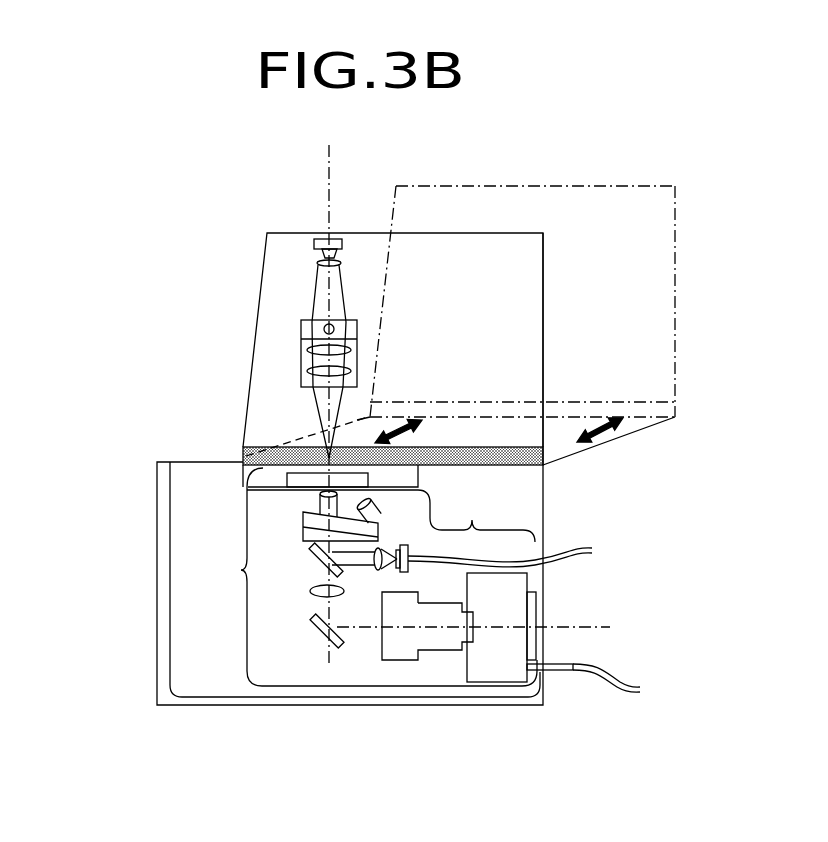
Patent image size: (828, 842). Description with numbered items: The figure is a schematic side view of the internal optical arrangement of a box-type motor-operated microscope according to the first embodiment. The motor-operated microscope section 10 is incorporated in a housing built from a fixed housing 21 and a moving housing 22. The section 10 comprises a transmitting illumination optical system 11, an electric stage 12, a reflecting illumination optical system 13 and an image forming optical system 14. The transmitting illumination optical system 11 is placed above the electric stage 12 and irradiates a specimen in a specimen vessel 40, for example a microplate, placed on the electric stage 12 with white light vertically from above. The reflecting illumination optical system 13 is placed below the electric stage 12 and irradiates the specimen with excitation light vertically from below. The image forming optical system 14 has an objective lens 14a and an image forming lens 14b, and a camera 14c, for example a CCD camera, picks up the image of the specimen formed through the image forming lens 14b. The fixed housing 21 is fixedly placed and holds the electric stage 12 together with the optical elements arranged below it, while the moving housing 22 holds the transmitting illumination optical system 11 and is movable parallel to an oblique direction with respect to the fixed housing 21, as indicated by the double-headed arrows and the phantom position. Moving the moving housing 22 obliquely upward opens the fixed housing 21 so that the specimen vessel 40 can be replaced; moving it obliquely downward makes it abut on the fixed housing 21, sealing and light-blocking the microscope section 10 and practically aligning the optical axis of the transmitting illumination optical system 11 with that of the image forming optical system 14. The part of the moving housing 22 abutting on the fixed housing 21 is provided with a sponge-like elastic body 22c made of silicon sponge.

The motor-operated microscope section 10 is at (179, 242).
The transmitting illumination optical system 11 is at (235, 242).
The electric stage 12 is at (240, 470).
The reflecting illumination optical system 13 is at (419, 533).
The image forming optical system 14 is at (371, 577).
The objective lens 14a is at (319, 503).
The image forming lens 14b is at (312, 592).
The camera 14c is at (513, 646).
The fixed housing 21 is at (157, 589).
The moving housing 22 is at (280, 232).
The sponge-like elastic body 22c is at (543, 457).
The specimen vessel 40 is at (242, 452).